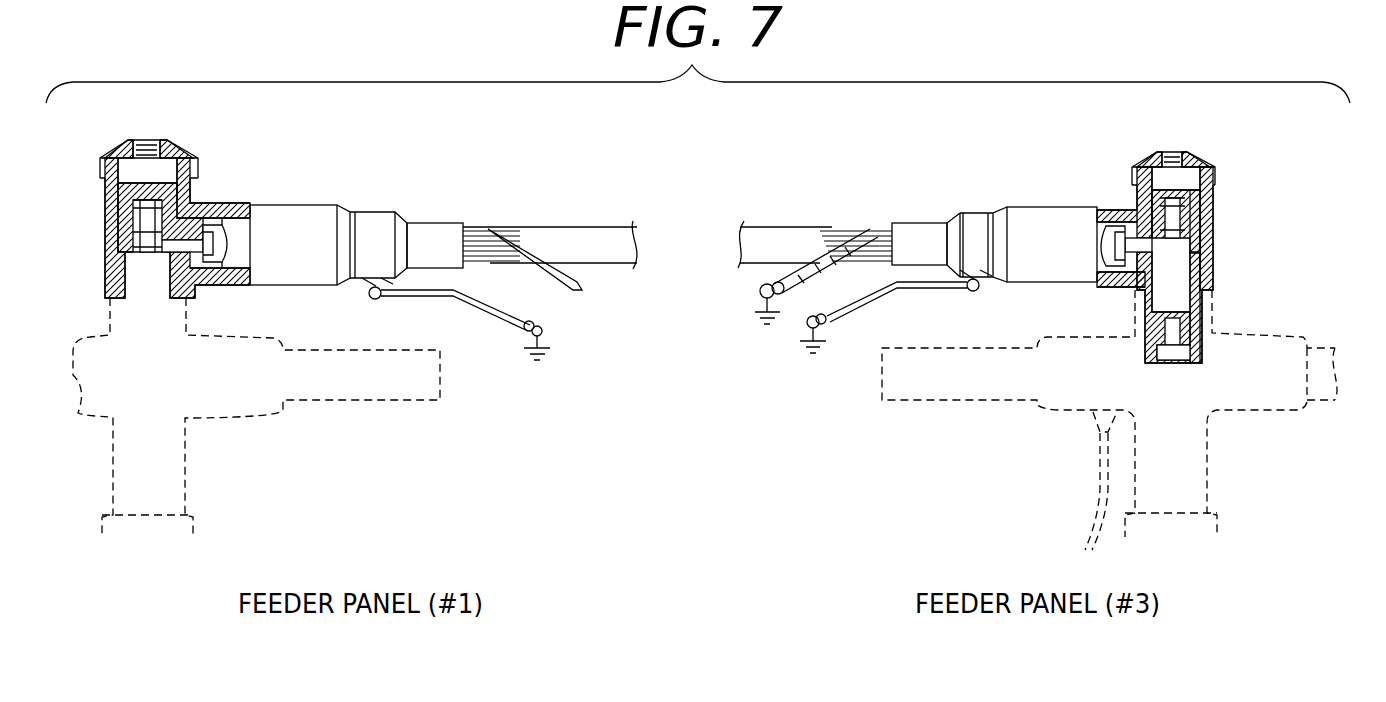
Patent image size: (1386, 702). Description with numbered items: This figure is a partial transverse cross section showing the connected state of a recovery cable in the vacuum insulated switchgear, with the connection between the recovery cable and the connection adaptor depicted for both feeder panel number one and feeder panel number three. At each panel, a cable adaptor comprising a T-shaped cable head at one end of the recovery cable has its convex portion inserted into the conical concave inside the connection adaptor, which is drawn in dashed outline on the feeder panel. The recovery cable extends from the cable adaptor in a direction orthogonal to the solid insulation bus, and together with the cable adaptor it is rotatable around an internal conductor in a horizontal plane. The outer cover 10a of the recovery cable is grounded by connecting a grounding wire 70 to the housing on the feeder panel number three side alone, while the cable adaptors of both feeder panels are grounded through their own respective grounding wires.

The outer cover 10a is at (806, 262).
The grounding wire 70 is at (760, 311).